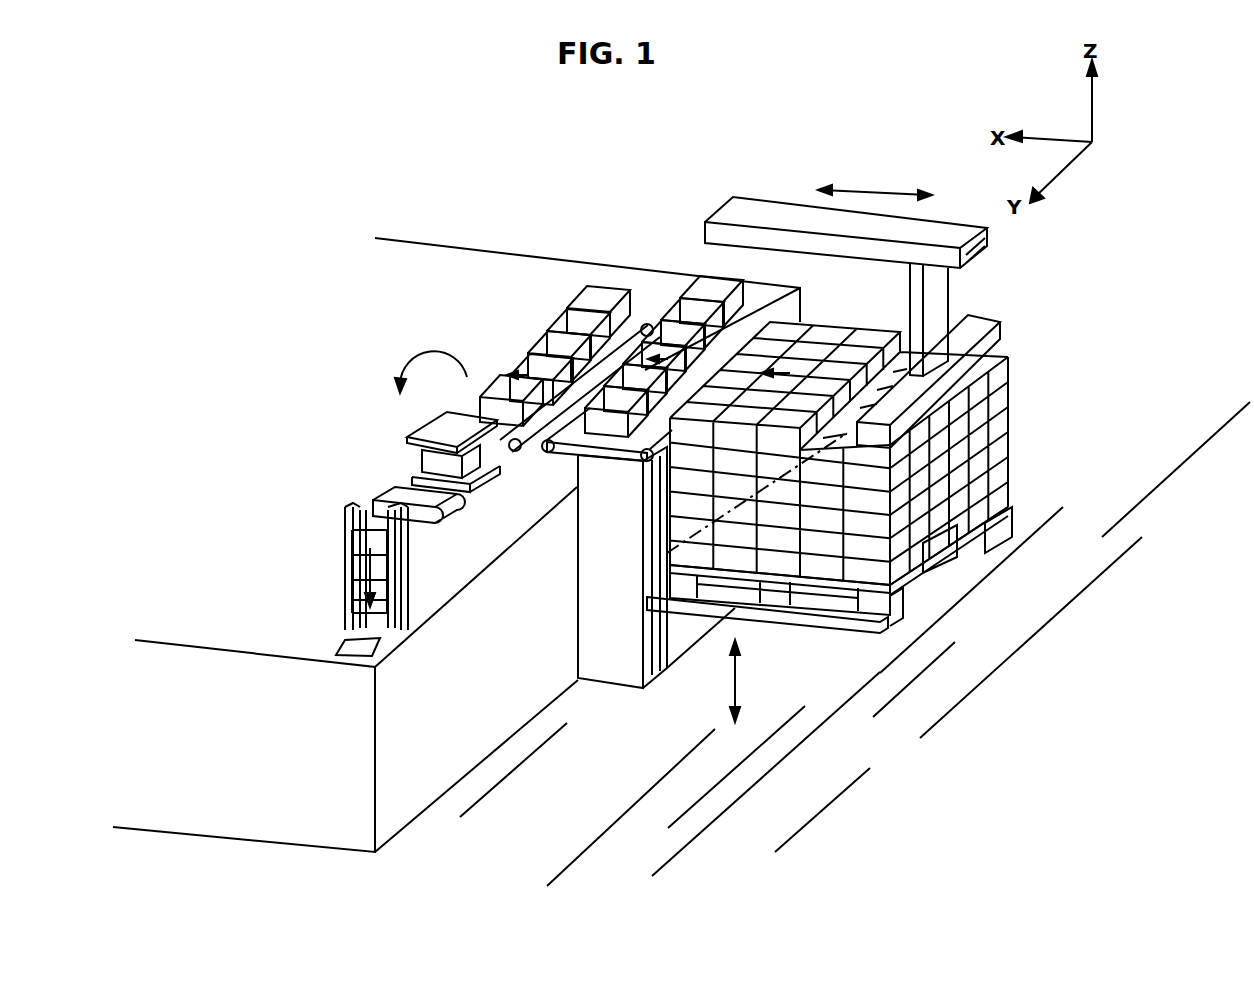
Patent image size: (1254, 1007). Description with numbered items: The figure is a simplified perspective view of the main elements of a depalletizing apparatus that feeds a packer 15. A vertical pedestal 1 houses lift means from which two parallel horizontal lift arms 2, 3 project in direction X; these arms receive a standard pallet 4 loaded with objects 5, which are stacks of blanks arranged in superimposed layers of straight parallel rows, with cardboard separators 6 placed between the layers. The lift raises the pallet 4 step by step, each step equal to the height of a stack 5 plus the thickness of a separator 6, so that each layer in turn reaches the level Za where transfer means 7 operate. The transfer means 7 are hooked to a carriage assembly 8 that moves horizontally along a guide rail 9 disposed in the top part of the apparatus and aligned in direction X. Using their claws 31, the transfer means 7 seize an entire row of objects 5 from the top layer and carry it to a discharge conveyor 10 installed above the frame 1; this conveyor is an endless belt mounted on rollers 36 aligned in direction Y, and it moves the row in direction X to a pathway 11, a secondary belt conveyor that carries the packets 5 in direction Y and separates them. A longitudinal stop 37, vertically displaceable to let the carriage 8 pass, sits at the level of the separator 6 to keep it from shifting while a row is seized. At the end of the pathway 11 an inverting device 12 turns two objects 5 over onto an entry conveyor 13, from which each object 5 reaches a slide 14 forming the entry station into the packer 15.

The vertical pedestal 1 is at (597, 598).
The lift arm 2 is at (903, 627).
The lift arm 3 is at (1012, 520).
The pallet 4 is at (1010, 500).
The objects 5 is at (712, 322).
The separators 6 is at (1008, 410).
The transfer means 7 is at (997, 332).
The carriage assembly 8 is at (940, 303).
The guide rail 9 is at (756, 206).
The discharge conveyor 10 is at (574, 483).
The pathway 11 is at (643, 323).
The inverting device 12 is at (413, 467).
The entry conveyor 13 is at (388, 494).
The slide 14 is at (340, 545).
The packer 15 is at (212, 645).
The claws 31 is at (848, 430).
The rollers 36 is at (548, 453).
The longitudinal stop 37 is at (645, 457).
The level Za is at (700, 547).